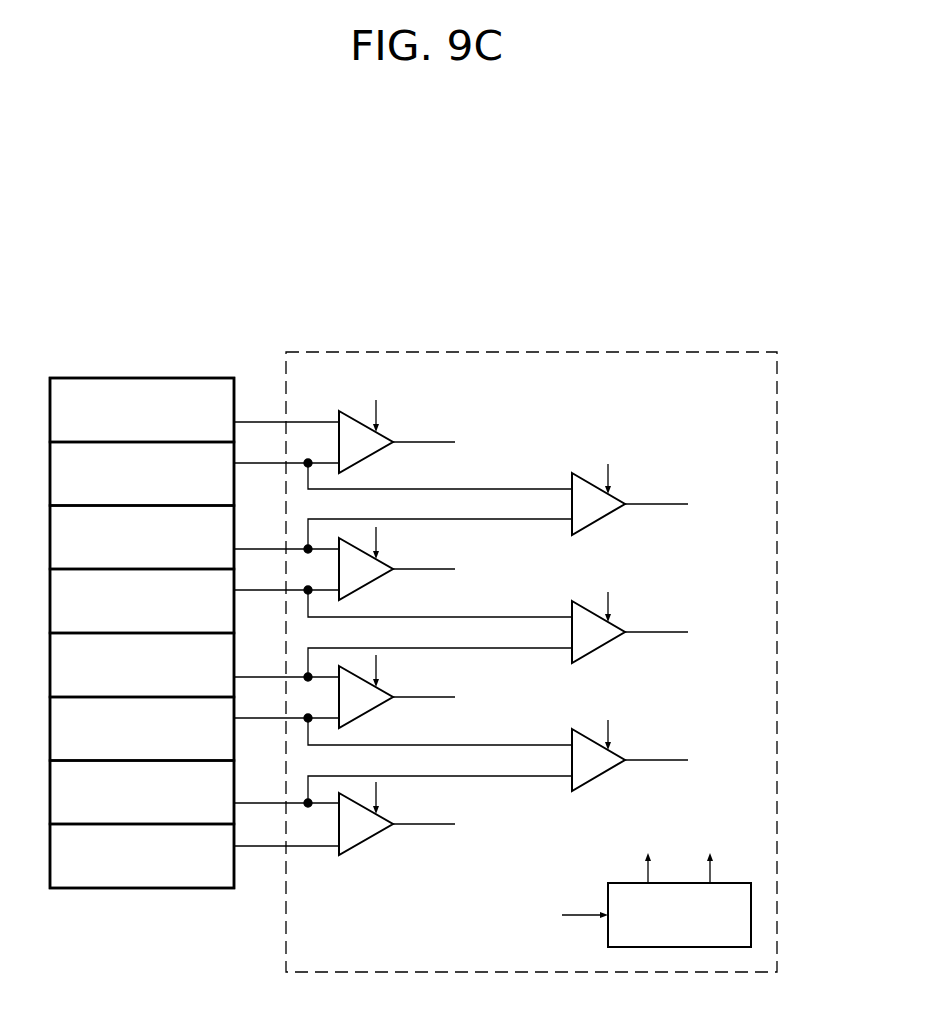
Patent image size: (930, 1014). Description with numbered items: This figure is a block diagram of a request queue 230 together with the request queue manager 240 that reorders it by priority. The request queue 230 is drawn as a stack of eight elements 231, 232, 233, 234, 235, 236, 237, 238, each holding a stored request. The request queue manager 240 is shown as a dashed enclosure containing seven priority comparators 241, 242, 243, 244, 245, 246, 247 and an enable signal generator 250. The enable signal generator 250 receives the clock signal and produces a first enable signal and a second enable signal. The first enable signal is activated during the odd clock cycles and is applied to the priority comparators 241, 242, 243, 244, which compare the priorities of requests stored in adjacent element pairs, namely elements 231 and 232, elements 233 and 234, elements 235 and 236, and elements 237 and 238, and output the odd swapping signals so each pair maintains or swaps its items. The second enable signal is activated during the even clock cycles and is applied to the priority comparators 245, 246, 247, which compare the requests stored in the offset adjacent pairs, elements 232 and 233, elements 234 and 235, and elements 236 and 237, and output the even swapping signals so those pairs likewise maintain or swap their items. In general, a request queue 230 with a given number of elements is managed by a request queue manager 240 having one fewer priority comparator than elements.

The request queue 230 is at (141, 378).
The element 231 is at (194, 410).
The element 232 is at (194, 474).
The element 233 is at (194, 538).
The element 234 is at (194, 601).
The element 235 is at (194, 665).
The element 236 is at (194, 729).
The element 237 is at (194, 793).
The element 238 is at (194, 856).
The request queue manager 240 is at (528, 352).
The priority comparator 241 is at (370, 458).
The priority comparator 242 is at (370, 585).
The priority comparator 243 is at (370, 713).
The priority comparator 244 is at (370, 840).
The priority comparator 245 is at (602, 520).
The priority comparator 246 is at (602, 648).
The priority comparator 247 is at (602, 776).
The enable signal generator 250 is at (751, 915).